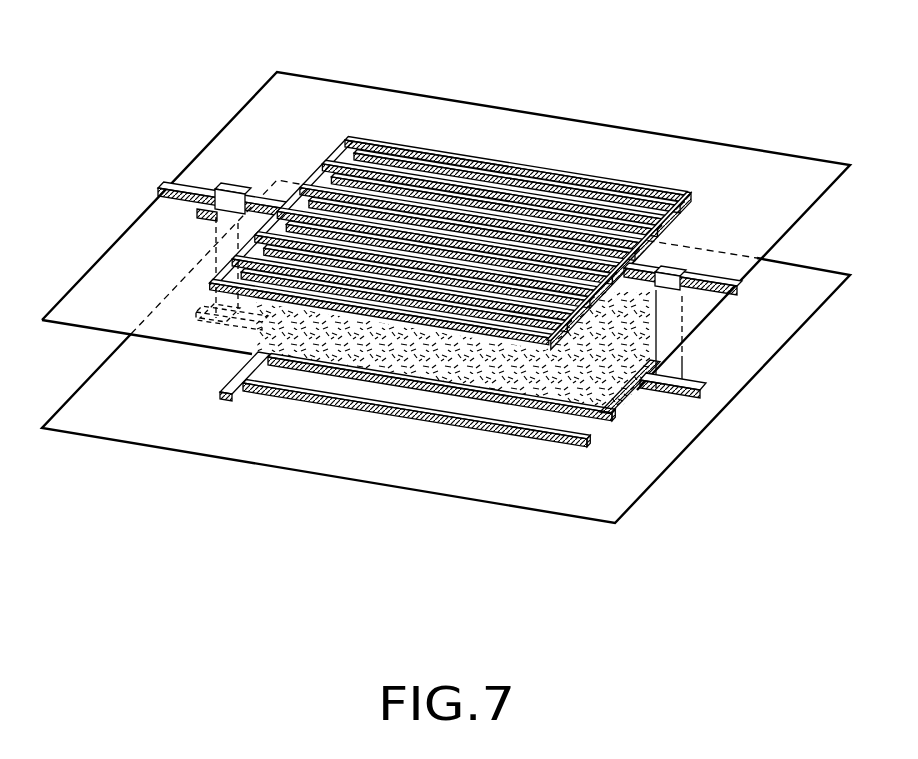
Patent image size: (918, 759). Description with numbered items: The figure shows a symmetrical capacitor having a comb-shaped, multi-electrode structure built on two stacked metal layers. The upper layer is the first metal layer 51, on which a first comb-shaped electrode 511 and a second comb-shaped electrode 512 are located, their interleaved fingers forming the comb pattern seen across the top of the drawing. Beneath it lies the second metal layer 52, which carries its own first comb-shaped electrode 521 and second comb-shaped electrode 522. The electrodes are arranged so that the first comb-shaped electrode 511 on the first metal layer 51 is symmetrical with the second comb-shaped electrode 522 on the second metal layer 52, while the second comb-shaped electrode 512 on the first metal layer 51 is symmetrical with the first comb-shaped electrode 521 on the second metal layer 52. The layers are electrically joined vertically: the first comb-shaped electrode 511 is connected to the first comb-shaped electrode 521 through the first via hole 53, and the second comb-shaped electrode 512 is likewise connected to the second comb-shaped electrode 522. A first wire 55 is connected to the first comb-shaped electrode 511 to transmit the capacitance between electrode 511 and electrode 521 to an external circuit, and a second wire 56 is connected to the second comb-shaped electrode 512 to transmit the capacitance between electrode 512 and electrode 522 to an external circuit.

The first metal layer 51 is at (253, 120).
The first comb-shaped electrode 511 is at (341, 139).
The second comb-shaped electrode 512 is at (682, 207).
The second metal layer 52 is at (263, 447).
The first comb-shaped electrode 521 is at (207, 390).
The second comb-shaped electrode 522 is at (573, 438).
The first via hole 53 is at (223, 232).
The first wire 55 is at (182, 188).
The second wire 56 is at (740, 285).